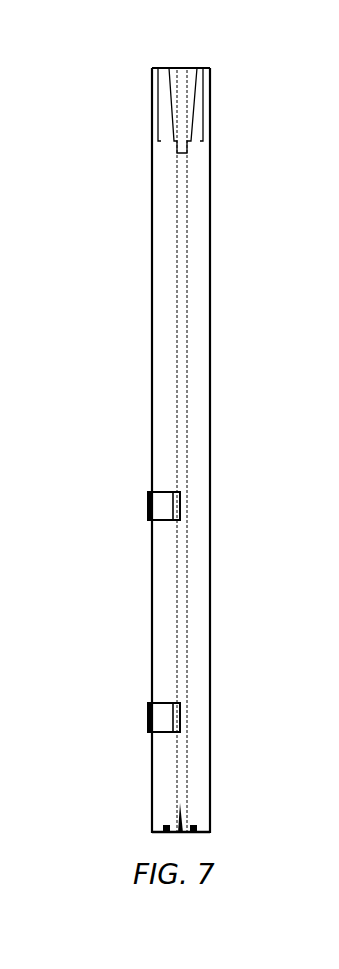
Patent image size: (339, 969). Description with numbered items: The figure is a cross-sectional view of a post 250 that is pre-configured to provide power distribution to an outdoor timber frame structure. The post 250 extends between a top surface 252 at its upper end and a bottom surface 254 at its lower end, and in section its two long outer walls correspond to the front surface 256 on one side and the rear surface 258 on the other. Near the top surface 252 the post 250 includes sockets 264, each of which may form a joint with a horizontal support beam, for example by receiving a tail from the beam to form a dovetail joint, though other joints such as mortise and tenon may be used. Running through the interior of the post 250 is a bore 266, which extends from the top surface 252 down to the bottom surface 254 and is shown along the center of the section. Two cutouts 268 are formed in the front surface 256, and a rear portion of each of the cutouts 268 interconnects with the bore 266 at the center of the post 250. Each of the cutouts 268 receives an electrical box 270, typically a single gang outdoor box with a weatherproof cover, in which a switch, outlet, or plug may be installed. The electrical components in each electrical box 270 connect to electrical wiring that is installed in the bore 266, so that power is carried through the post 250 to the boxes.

The post 250 is at (147, 247).
The top surface 252 is at (200, 68).
The bottom surface 254 is at (204, 835).
The front surface 256 is at (150, 412).
The rear surface 258 is at (211, 406).
The sockets 264 is at (212, 108).
The bore 266 is at (185, 303).
The cutouts 268 is at (178, 497).
The electrical box 270 is at (165, 510).